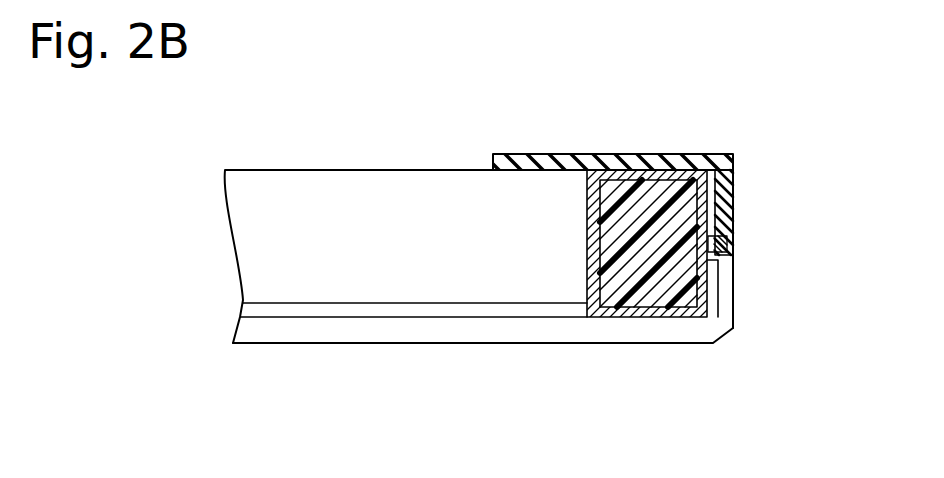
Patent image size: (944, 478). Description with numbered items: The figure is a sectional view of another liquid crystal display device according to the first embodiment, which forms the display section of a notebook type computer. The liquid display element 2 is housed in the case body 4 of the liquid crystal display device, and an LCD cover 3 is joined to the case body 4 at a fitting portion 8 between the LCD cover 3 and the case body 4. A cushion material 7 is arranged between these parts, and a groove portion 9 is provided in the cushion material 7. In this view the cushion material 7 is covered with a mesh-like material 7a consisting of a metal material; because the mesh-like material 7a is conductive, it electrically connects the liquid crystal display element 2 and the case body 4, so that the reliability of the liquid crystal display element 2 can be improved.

The liquid crystal display element 2 is at (343, 193).
The LCD cover 3 is at (735, 177).
The case body 4 is at (585, 336).
The cushion material 7 is at (665, 205).
The mesh-like material 7a is at (593, 177).
The fitting portion 8 is at (725, 243).
The groove portion 9 is at (731, 154).